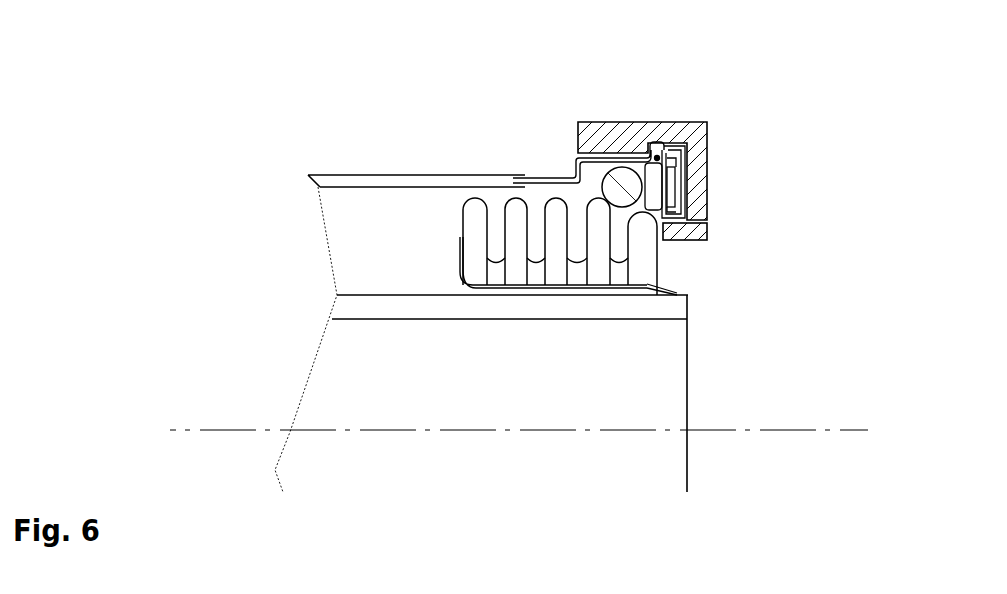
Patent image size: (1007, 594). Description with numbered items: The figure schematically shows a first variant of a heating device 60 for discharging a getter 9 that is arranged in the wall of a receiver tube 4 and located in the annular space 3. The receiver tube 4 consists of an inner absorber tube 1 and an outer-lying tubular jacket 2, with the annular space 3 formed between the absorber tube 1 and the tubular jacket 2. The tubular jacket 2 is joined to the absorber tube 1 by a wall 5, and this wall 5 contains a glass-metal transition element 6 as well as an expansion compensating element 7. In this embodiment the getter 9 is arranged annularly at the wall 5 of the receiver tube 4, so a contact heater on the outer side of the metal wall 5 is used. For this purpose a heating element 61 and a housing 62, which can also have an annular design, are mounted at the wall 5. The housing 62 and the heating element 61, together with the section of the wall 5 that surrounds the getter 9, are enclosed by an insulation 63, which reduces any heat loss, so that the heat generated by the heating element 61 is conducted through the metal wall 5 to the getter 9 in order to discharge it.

The absorber tube 1 is at (355, 304).
The tubular jacket 2 is at (365, 177).
The annular space 3 is at (368, 262).
The receiver tube 4 is at (228, 387).
The wall 5 is at (696, 297).
The glass-metal transition element 6 is at (578, 162).
The expansion compensating element 7 is at (597, 229).
The getter 9 is at (608, 188).
The heating device 60 is at (736, 88).
The heating element 61 is at (678, 175).
The housing 62 is at (683, 200).
The insulation 63 is at (727, 177).